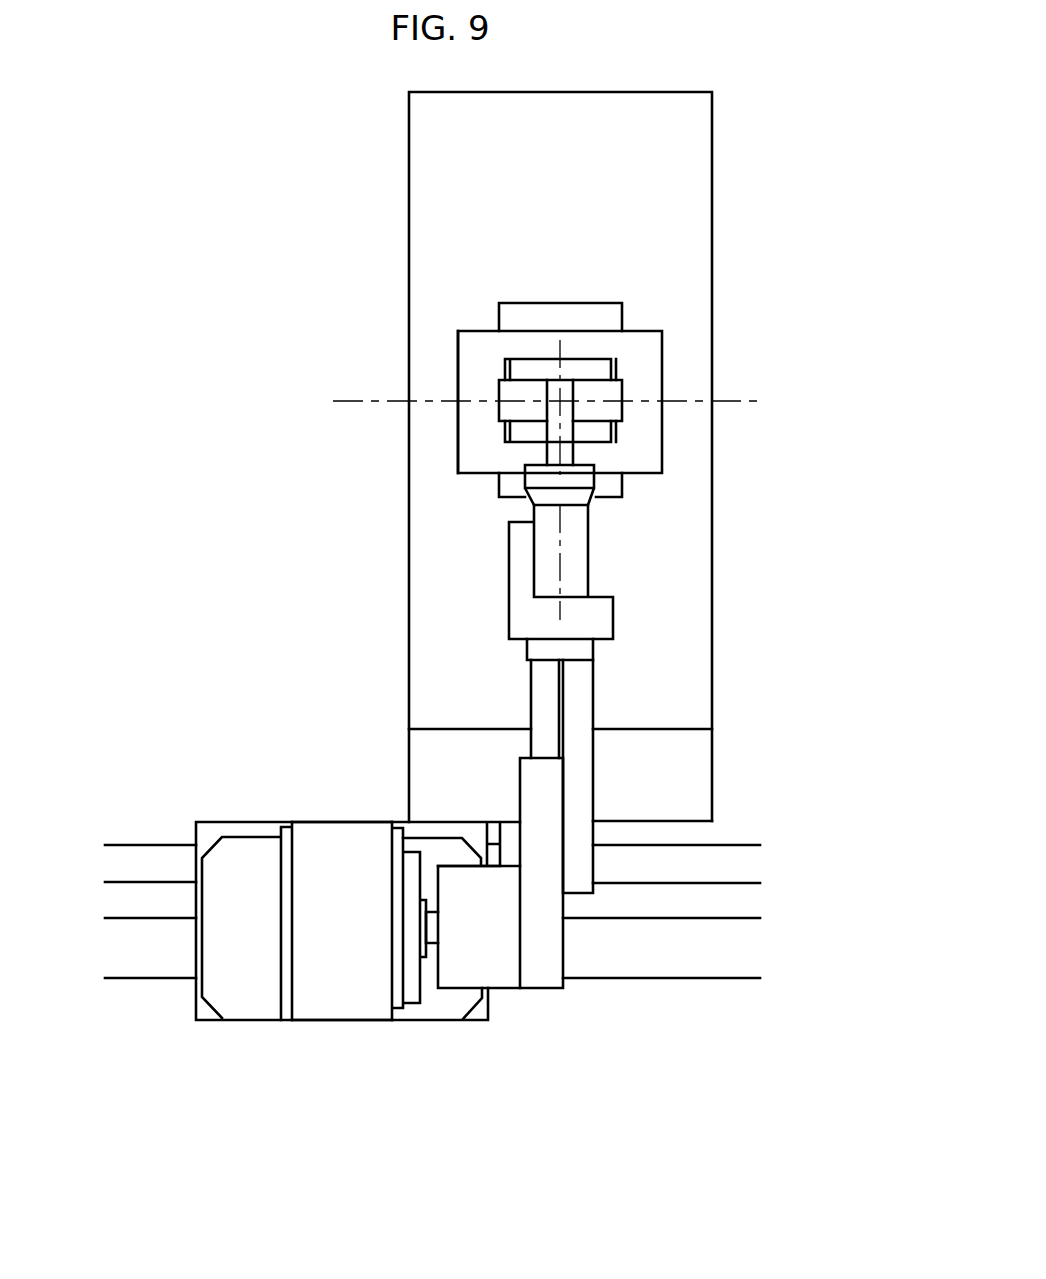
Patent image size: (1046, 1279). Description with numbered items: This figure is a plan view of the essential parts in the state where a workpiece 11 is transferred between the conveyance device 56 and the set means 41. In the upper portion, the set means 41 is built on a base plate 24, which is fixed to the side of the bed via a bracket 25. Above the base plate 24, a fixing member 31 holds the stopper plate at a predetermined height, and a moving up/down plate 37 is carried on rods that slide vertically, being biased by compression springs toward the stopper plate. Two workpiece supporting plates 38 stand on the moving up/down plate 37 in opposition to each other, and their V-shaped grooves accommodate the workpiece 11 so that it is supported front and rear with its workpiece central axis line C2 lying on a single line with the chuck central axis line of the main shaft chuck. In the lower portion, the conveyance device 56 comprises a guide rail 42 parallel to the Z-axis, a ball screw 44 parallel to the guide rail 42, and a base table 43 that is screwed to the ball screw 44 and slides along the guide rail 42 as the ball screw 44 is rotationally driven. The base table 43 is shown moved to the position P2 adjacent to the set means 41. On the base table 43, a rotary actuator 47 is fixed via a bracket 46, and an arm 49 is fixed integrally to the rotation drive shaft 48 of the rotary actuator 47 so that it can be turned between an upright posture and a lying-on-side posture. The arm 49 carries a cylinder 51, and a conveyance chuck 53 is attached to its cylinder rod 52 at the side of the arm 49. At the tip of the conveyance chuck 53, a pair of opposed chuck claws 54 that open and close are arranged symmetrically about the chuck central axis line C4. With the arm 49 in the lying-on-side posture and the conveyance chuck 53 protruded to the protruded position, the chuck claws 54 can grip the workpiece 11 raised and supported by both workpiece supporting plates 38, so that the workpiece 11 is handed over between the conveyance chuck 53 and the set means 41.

The workpiece 11 is at (590, 388).
The base plate 24 is at (677, 186).
The bracket 25 is at (697, 775).
The fixing member 31 is at (588, 312).
The moving up/down plate 37 is at (495, 342).
The workpiece supporting plate 38 is at (473, 414).
The set means 41 is at (678, 455).
The guide rail 42 is at (143, 860).
The base table 43 is at (235, 828).
The ball screw 44 is at (668, 955).
The bracket 46 is at (235, 992).
The rotary actuator 47 is at (333, 1000).
The rotation drive shaft 48 is at (435, 935).
The arm 49 is at (499, 974).
The cylinder 51 is at (543, 973).
The cylinder rod 52 is at (540, 690).
The conveyance chuck 53 is at (575, 558).
The chuck claws 54 is at (567, 448).
The conveyance device 56 is at (358, 906).
The workpiece central axis line C2 is at (376, 400).
The chuck central axis line C4 is at (540, 523).
The position P2 is at (385, 1045).